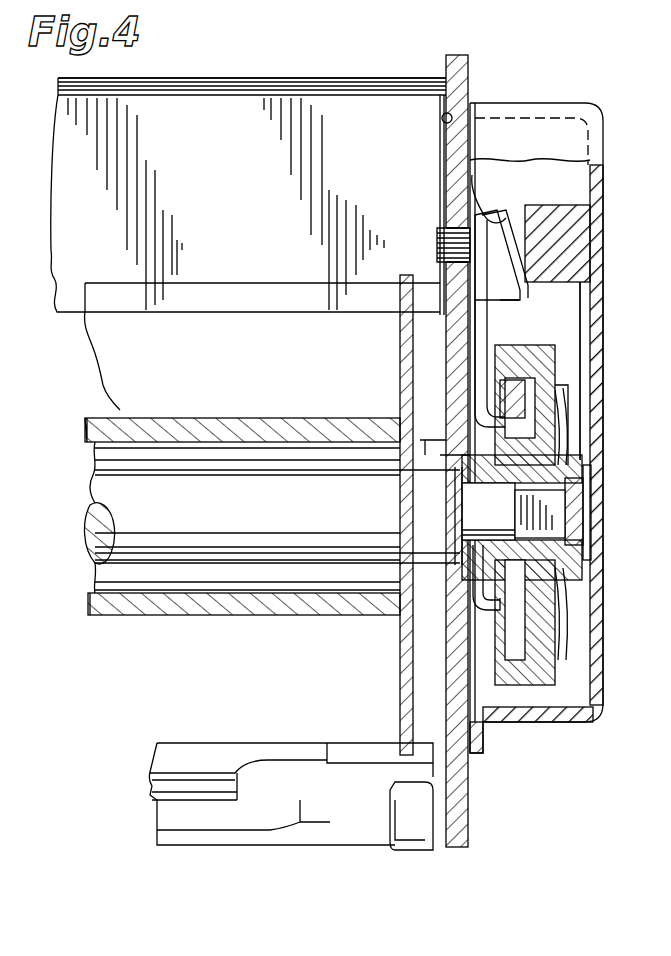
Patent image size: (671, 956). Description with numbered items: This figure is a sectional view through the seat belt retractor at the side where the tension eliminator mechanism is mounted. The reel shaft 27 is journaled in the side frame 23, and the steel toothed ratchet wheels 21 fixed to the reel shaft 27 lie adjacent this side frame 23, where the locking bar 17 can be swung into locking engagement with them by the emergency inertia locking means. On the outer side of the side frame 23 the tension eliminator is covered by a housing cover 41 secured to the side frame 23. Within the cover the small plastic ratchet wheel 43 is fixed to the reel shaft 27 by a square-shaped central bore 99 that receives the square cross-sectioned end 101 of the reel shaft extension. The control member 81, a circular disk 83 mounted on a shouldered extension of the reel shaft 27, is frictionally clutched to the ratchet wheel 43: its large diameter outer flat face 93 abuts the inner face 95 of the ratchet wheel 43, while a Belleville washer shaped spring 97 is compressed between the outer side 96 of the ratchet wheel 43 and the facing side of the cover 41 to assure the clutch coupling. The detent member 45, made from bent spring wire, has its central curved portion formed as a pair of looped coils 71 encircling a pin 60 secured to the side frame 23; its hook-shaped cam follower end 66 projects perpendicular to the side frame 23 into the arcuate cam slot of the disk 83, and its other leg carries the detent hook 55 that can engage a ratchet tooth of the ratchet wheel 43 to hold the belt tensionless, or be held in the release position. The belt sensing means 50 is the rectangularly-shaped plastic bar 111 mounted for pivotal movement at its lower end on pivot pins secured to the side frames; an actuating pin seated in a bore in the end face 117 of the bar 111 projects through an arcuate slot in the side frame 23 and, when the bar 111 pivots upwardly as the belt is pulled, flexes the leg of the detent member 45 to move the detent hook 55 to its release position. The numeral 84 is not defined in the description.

The rectangularly-shaped bar 111 is at (262, 191).
The belt sensing means 50 is at (313, 73).
The end face 117 is at (446, 118).
The side frame 23 is at (470, 56).
The square-shaped central bore 99 is at (583, 525).
The pin 60 is at (518, 227).
The looped coils 71 is at (497, 210).
The detent member 45 is at (518, 302).
The control member 81 is at (518, 350).
The outer flat face 93 is at (522, 392).
The inner face 95 is at (533, 402).
The outer side 96 is at (560, 350).
The Belleville washer shaped spring 97 is at (558, 438).
The cam follower end 66 is at (540, 478).
The housing cover 41 is at (587, 462).
The coupling 84 is at (500, 526).
The square cross-sectioned end 101 is at (556, 510).
The circular disk 83 is at (460, 476).
The reel shaft 27 is at (282, 526).
The toothed ratchet wheels 21 is at (400, 355).
The detent hook 55 is at (470, 600).
The ratchet wheel 43 is at (546, 686).
The locking bar 17 is at (242, 752).